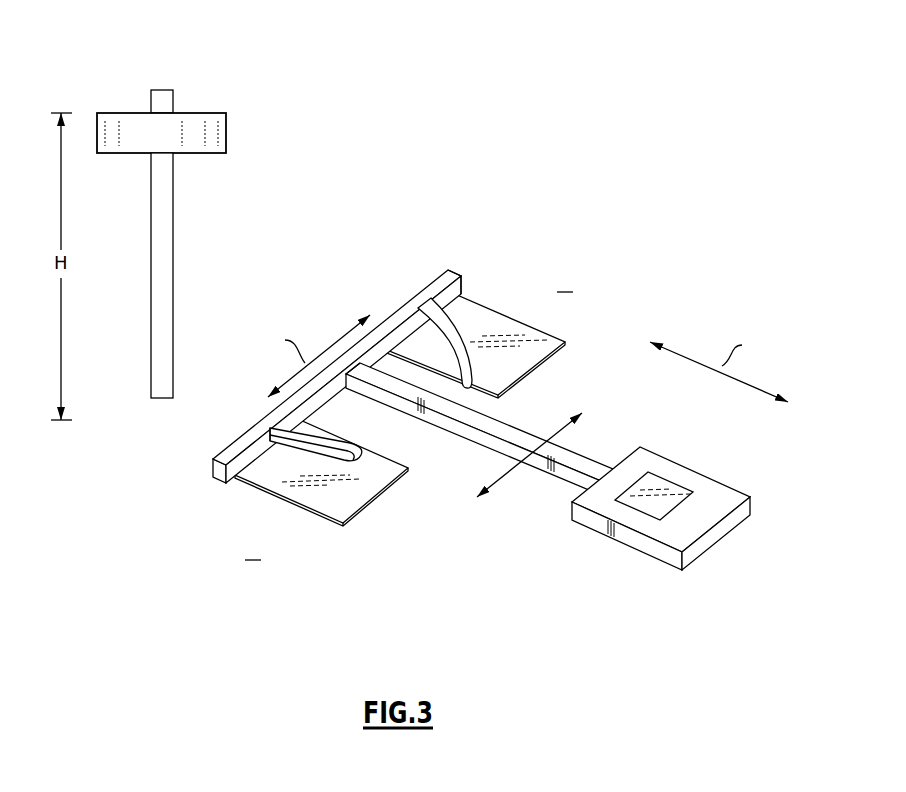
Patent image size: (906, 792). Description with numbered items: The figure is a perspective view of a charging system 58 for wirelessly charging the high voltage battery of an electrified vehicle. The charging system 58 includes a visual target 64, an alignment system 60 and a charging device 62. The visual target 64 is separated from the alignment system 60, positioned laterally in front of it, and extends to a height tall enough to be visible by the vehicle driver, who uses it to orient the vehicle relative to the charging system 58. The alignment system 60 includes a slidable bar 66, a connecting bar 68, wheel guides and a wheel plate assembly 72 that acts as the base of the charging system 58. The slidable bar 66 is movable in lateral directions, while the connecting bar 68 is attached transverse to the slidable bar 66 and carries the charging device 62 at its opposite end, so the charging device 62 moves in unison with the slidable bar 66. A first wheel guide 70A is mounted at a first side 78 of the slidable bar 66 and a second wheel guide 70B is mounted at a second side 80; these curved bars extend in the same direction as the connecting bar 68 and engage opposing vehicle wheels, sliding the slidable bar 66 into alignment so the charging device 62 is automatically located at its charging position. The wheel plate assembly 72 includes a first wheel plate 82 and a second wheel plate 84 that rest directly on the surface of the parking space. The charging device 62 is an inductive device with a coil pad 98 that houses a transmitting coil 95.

The charging system 58 is at (464, 312).
The alignment system 60 is at (322, 342).
The charging device 62 is at (672, 505).
The visual target 64 is at (147, 82).
The slidable bar 66 is at (456, 274).
The connecting bar 68 is at (467, 432).
The first wheel guide 70A is at (318, 444).
The second wheel guide 70B is at (458, 337).
The wheel plate assembly 72 is at (254, 499).
The first side of the slidable bar 78 is at (204, 439).
The second side of the slidable bar 80 is at (437, 264).
The first wheel plate 82 is at (360, 490).
The second wheel plate 84 is at (543, 348).
The transmitting coil 95 is at (670, 482).
The coil pad 98 is at (730, 487).